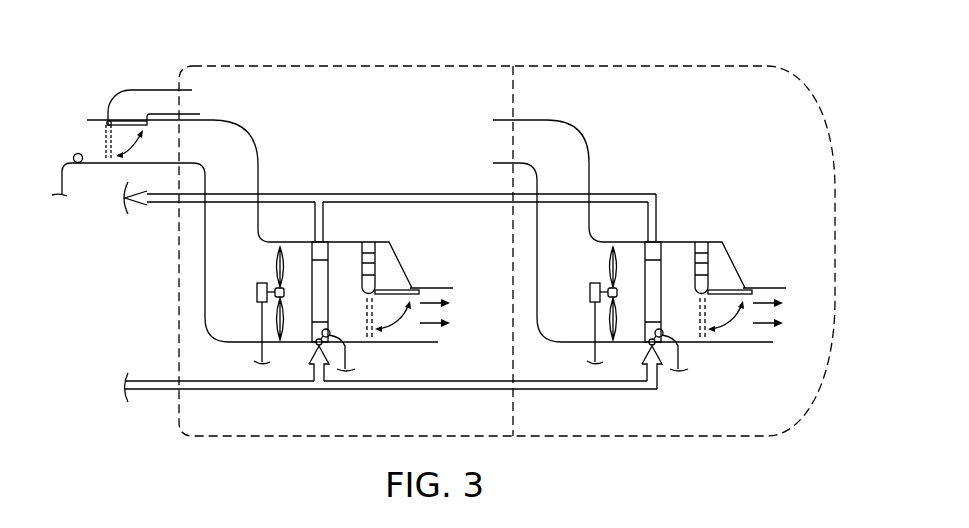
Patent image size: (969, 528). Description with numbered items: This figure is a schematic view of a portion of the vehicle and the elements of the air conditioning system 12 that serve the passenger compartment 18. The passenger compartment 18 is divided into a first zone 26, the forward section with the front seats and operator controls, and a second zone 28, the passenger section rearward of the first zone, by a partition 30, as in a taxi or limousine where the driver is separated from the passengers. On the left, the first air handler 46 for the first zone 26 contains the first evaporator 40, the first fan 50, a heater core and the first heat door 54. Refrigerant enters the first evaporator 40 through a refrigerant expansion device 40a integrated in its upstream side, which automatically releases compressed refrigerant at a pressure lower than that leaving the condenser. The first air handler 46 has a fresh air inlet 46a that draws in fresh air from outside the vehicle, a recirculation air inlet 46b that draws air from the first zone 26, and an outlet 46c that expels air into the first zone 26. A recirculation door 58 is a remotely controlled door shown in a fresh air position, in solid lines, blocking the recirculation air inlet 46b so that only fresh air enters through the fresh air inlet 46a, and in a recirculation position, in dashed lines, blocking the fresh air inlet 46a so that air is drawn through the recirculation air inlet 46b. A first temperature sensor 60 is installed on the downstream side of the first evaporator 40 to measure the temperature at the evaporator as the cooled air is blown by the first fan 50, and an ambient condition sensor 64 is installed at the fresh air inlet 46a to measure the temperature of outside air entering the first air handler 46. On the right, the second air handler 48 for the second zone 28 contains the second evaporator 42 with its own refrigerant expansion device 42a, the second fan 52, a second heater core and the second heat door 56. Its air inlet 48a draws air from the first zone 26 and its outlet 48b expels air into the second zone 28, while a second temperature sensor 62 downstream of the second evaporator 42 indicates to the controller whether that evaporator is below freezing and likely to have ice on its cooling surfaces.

The air conditioning system 12 is at (410, 186).
The passenger compartment 18 is at (432, 56).
The first zone 26 is at (348, 102).
The second zone 28 is at (670, 100).
The partition 30 is at (516, 88).
The first evaporator 40 is at (329, 277).
The refrigerant expansion device 40a is at (316, 340).
The second evaporator 42 is at (667, 268).
The refrigerant expansion device 42a is at (634, 362).
The first air handler 46 is at (258, 155).
The fresh air inlet 46a is at (95, 124).
The recirculation air inlet 46b is at (192, 90).
The outlet 46c is at (438, 342).
The second air handler 48 is at (639, 231).
The air inlet 48a is at (467, 136).
The outlet 48b is at (782, 349).
The first fan 50 is at (257, 292).
The second fan 52 is at (585, 305).
The first heat door 54 is at (390, 287).
The second heat door 56 is at (737, 290).
The recirculation door 58 is at (127, 120).
The first temperature sensor 60 is at (330, 331).
The second temperature sensor 62 is at (673, 328).
The ambient condition sensor 64 is at (94, 154).